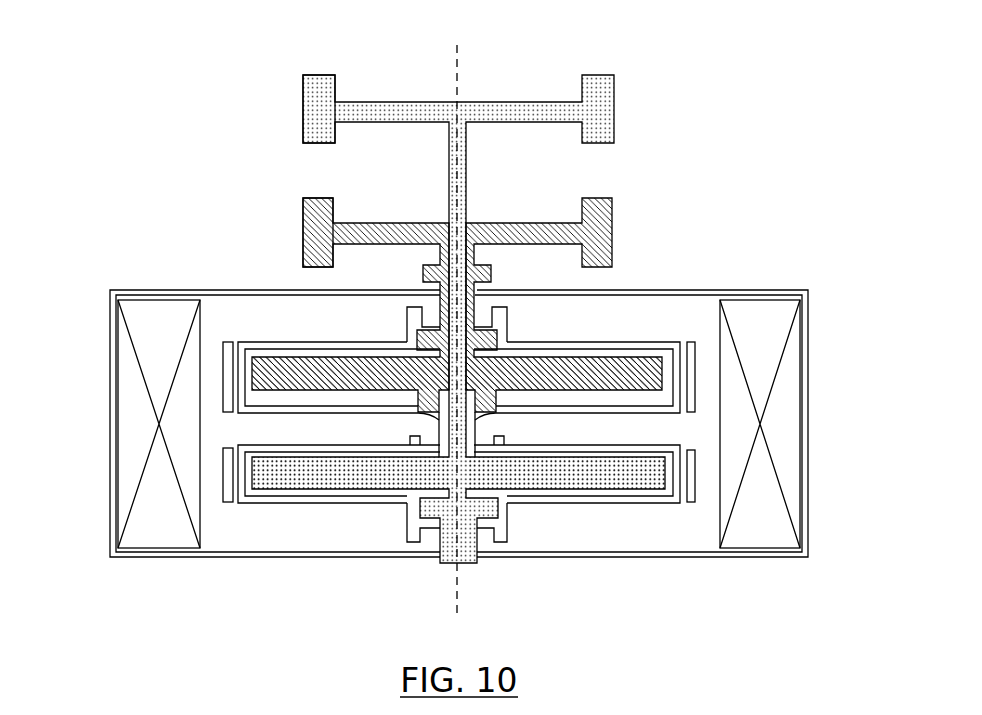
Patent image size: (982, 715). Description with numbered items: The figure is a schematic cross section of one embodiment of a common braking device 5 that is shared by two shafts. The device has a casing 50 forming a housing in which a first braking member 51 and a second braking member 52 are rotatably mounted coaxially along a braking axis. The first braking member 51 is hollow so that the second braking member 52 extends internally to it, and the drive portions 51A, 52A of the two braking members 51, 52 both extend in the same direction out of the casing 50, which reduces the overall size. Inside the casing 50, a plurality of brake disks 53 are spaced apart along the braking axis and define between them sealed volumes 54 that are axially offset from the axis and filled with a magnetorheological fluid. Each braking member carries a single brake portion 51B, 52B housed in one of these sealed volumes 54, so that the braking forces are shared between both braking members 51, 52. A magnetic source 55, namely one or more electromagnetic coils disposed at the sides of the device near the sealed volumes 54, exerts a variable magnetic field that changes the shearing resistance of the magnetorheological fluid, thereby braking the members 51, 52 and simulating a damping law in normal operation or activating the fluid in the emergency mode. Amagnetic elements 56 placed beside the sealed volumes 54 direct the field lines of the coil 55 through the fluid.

The braking device 5 is at (737, 197).
The casing 50 is at (662, 291).
The first braking member 51 is at (508, 205).
The drive portion 51A is at (305, 213).
The brake portion 51B is at (295, 357).
The second braking member 52 is at (497, 78).
The drive portion 52A is at (301, 107).
The brake portion 52B is at (297, 483).
The brake disks 53 is at (602, 328).
The sealed volumes 54 is at (245, 345).
The magnetic source 55 is at (795, 365).
The amagnetic elements 56 is at (688, 342).